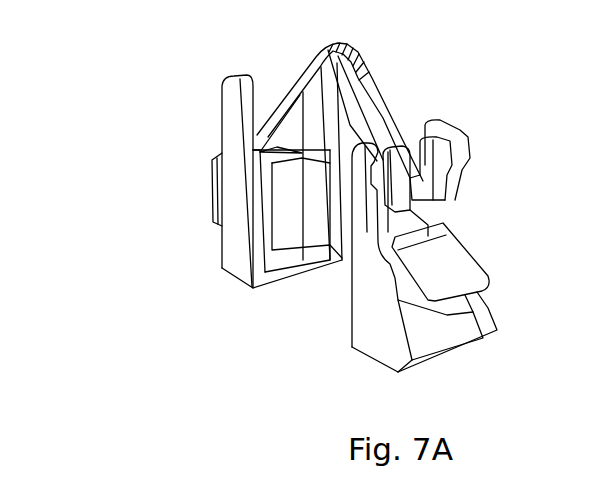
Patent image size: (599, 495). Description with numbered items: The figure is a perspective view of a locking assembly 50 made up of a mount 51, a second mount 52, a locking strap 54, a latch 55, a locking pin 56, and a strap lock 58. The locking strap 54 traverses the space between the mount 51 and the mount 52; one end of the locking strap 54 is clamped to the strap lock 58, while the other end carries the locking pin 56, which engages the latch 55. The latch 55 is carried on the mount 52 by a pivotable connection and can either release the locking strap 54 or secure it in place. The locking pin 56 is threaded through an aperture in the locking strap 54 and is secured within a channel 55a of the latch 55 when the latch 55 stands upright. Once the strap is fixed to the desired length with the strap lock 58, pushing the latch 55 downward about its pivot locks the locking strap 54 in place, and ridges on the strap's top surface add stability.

The locking assembly 50 is at (112, 77).
The mount 51 is at (242, 250).
The mount 52 is at (358, 305).
The locking strap 54 is at (388, 94).
The latch 55 is at (430, 297).
The channel 55a is at (392, 203).
The locking pin 56 is at (428, 183).
The strap lock 58 is at (209, 175).